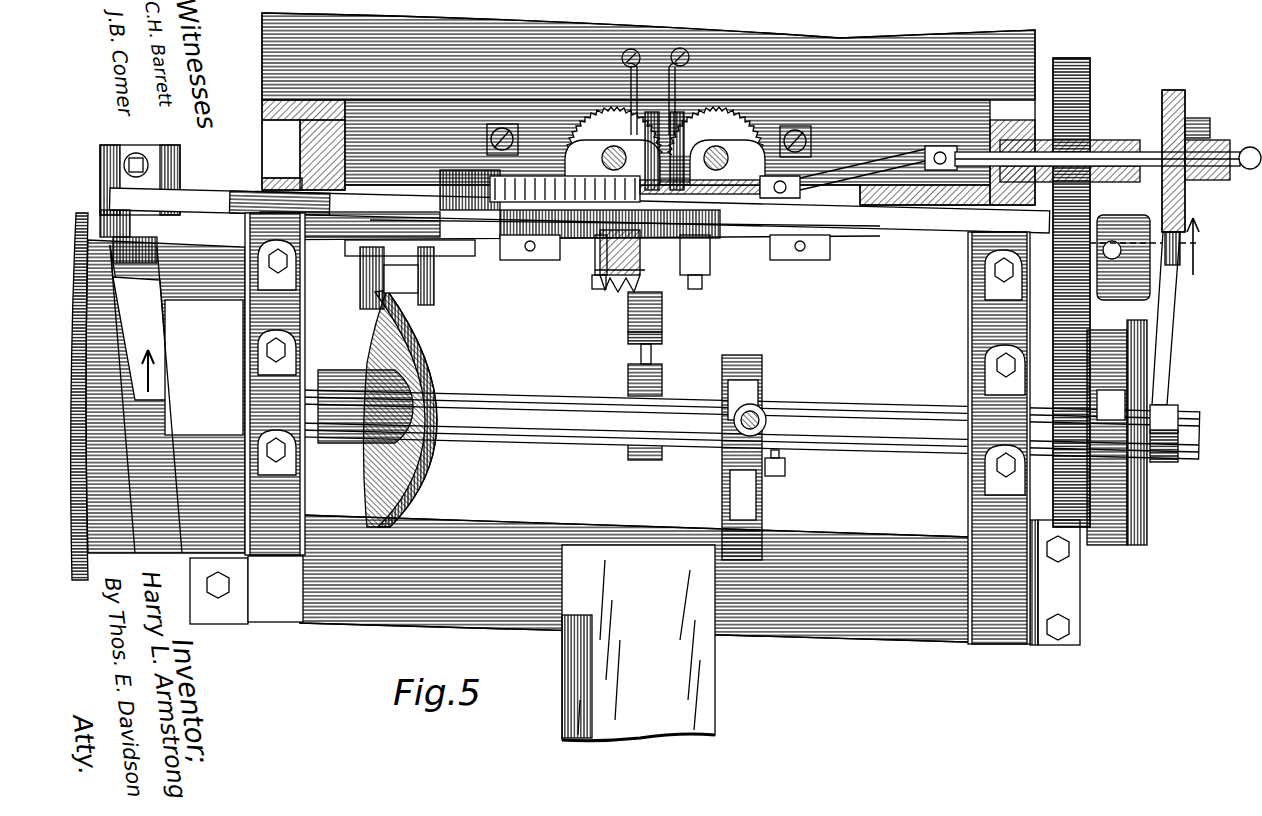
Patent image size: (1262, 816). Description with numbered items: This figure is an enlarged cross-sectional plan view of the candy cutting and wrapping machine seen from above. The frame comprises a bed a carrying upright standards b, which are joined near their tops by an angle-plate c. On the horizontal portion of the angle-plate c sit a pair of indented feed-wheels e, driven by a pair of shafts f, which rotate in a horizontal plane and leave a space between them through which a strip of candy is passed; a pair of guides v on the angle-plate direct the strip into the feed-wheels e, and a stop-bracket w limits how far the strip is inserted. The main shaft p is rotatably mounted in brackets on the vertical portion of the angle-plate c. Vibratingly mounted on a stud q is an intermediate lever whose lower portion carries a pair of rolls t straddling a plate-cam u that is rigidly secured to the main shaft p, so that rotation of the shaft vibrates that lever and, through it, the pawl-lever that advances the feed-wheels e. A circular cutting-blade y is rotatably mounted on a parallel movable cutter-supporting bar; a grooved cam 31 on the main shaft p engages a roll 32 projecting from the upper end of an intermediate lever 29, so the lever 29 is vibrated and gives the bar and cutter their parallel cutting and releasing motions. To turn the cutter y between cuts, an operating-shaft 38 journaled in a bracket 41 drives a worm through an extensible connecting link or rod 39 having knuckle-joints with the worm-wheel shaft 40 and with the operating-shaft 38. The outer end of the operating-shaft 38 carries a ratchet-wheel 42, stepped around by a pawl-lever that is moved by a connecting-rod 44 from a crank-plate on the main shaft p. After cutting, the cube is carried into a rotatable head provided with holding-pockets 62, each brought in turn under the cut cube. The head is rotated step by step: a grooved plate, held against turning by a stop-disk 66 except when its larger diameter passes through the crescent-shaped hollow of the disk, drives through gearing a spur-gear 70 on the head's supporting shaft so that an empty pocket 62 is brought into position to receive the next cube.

The intermediate lever 29 is at (180, 172).
The grooved cam 31 is at (158, 396).
The roll 32 is at (160, 248).
The operating-shaft 38 is at (1112, 152).
The extensible connecting link or rod 39 is at (900, 182).
The worm-wheel shaft 40 is at (702, 262).
The bracket 41 is at (1197, 252).
The ratchet-wheel 42 is at (1186, 100).
The connecting-rod 44 is at (1168, 340).
The holding-pockets 62 is at (630, 336).
The stop-disk 66 is at (652, 350).
The spur-gear 70 is at (1093, 62).
The bed a is at (858, 642).
The upright pillars or standards b is at (1108, 592).
The angle-plate c is at (396, 182).
The indented feed-wheels e is at (665, 131).
The shafts f is at (665, 162).
The main shaft p is at (862, 400).
The stud q is at (470, 238).
The rolls t is at (366, 306).
The plate-cam u is at (420, 480).
The guides v is at (640, 60).
The stop-bracket w is at (612, 272).
The circular cutting-blade y is at (528, 226).